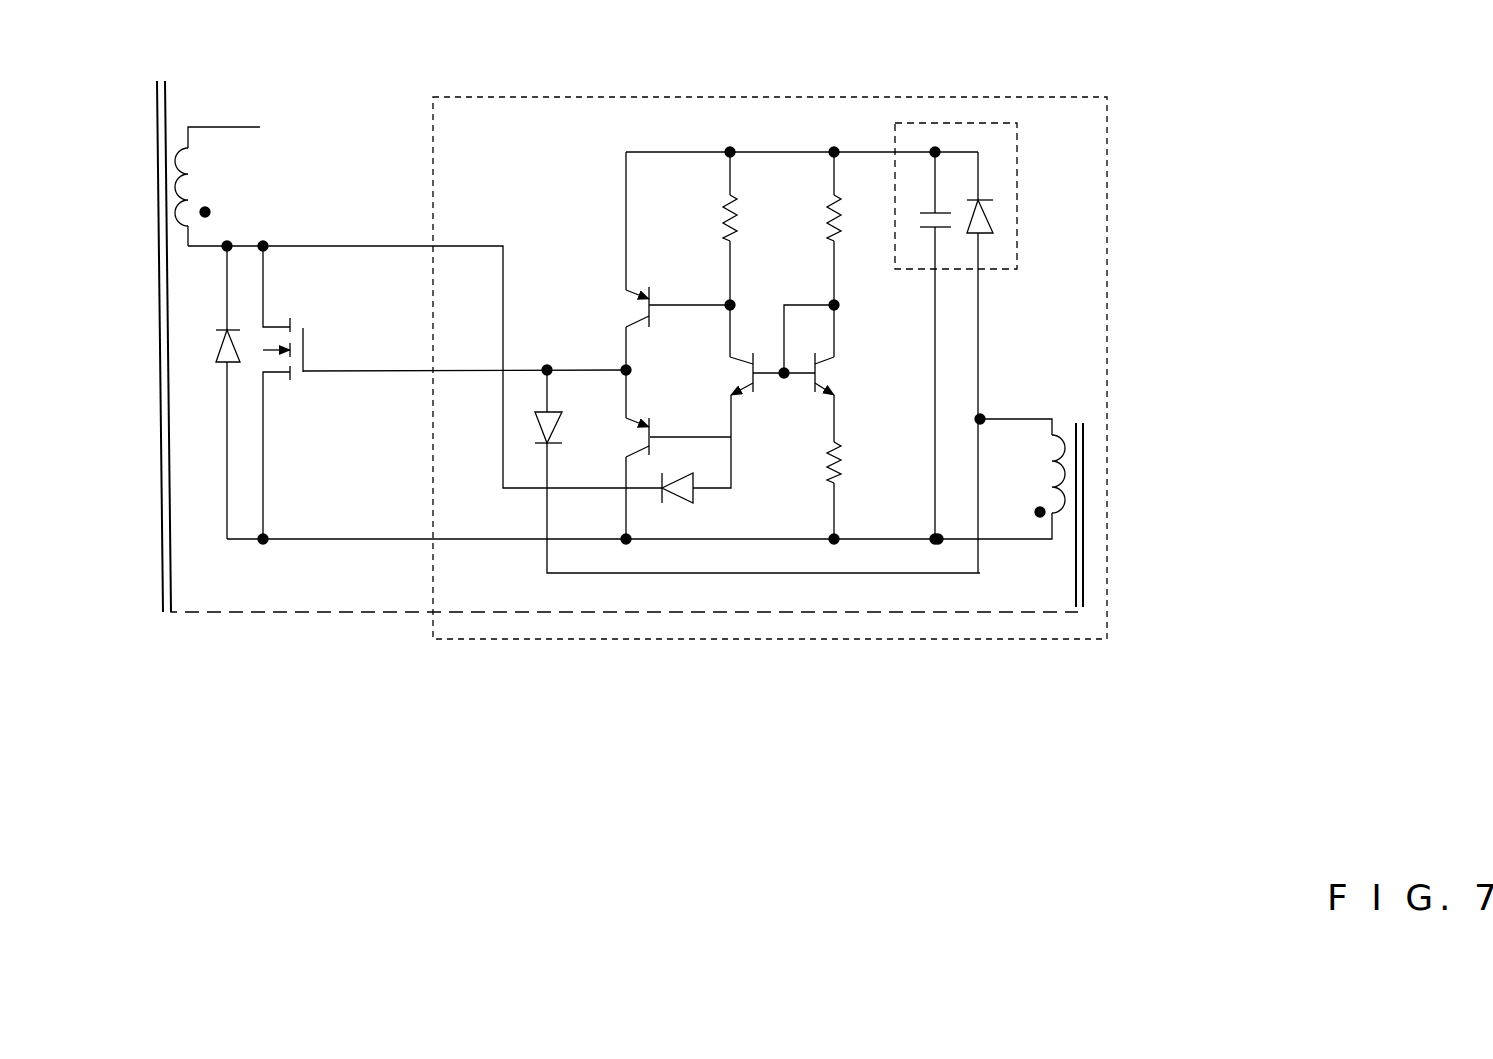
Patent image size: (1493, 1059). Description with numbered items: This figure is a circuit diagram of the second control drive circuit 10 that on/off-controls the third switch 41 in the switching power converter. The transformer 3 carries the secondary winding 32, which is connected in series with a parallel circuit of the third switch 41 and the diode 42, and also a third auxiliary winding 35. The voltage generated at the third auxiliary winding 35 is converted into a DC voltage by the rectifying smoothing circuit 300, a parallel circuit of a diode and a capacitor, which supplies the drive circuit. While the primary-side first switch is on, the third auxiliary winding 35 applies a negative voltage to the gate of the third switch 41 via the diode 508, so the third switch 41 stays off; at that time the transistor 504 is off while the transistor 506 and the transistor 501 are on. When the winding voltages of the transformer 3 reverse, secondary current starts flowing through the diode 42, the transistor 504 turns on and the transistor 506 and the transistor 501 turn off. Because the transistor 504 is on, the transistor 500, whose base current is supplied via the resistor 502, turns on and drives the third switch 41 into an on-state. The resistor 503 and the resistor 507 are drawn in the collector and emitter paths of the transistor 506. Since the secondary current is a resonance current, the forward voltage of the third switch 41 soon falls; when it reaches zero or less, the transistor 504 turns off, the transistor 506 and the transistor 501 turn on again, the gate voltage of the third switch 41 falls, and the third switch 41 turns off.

The transformer 3 is at (156, 76).
The second control drive circuit 10 is at (429, 128).
The secondary winding 32 is at (193, 188).
The third auxiliary winding 35 is at (1047, 450).
The third switch 41 is at (278, 378).
The diode 42 is at (222, 367).
The rectifying smoothing circuit 300 is at (1018, 158).
The transistor 500 is at (630, 312).
The transistor 501 is at (630, 447).
The resistor 502 is at (726, 208).
The resistor 503 is at (830, 208).
The transistor 504 is at (738, 370).
The transistor 506 is at (836, 368).
The resistor 507 is at (845, 447).
The diode 508 is at (537, 432).